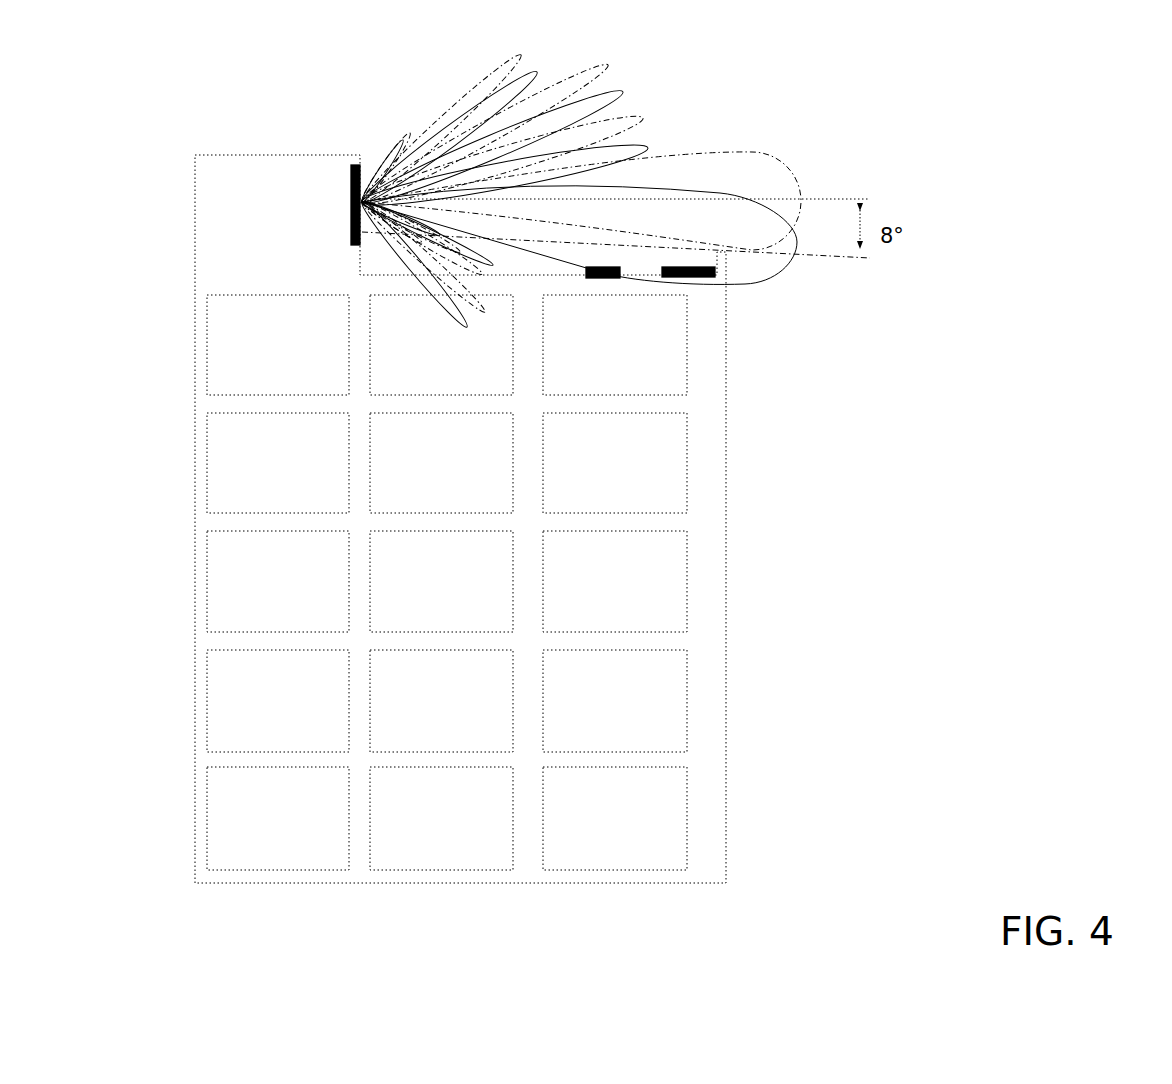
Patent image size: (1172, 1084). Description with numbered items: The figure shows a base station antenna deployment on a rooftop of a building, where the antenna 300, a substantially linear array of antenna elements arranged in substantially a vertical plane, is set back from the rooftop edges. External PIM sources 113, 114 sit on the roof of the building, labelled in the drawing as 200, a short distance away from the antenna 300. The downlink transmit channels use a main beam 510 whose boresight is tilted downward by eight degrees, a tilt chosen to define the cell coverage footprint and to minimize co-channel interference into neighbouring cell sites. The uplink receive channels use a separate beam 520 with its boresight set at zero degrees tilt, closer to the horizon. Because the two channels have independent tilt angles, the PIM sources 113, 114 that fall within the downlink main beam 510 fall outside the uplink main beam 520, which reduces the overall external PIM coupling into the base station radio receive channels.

The electronic device housing 200 is at (221, 154).
The antenna 300 is at (349, 178).
The PIM source 113 is at (697, 280).
The PIM source 114 is at (607, 280).
The far field antenna elevation relative gain response curve 510 is at (788, 274).
The far field antenna elevation relative gain response curve 520 is at (800, 182).